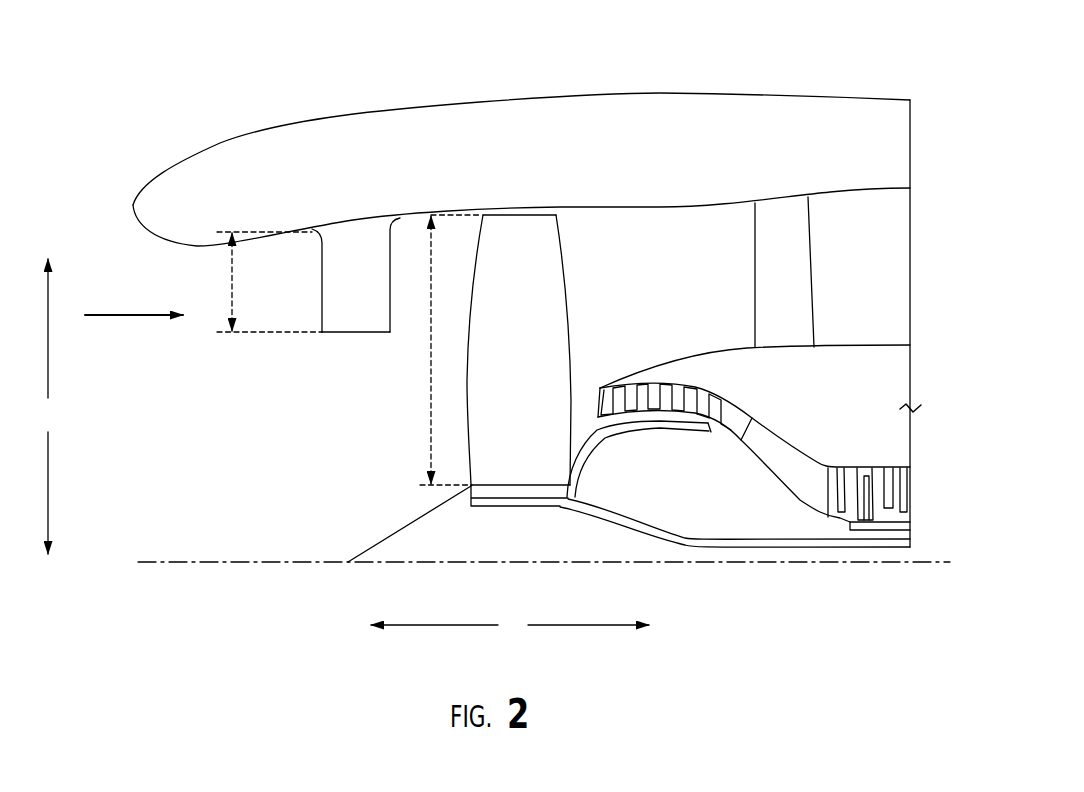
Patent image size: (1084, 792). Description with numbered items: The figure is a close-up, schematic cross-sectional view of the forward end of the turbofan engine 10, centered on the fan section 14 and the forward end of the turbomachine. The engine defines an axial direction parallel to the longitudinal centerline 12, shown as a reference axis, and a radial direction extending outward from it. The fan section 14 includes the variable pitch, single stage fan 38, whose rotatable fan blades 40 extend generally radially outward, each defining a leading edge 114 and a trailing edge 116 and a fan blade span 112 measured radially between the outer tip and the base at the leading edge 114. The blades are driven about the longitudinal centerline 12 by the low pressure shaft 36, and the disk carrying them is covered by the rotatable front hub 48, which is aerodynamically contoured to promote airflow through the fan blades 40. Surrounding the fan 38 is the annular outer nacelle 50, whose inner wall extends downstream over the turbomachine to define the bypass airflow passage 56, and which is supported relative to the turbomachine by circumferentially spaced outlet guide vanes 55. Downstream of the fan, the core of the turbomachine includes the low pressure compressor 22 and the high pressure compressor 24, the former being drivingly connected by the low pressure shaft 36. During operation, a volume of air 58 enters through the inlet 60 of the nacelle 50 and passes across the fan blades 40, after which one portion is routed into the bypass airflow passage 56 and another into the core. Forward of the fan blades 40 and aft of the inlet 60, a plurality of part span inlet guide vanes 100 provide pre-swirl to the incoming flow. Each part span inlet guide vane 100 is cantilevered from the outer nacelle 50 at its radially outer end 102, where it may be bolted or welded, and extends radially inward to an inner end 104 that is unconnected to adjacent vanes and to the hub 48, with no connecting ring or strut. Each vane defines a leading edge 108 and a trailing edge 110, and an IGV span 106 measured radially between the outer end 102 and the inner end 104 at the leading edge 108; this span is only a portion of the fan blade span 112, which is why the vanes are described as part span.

The turbofan engine 10 is at (713, 62).
The longitudinal centerline 12 is at (218, 562).
The fan section 14 is at (386, 132).
The low pressure compressor 22 is at (735, 392).
The high pressure compressor 24 is at (862, 455).
The low pressure shaft 36 is at (750, 548).
The fan 38 is at (533, 192).
The fan blade 40 is at (555, 345).
The hub 48 is at (370, 548).
The outer nacelle 50 is at (507, 100).
The outlet guide vane 55 is at (805, 283).
The bypass airflow passage 56 is at (755, 327).
The volume of air 58 is at (145, 315).
The inlet 60 is at (132, 276).
The part span inlet guide vane 100 is at (343, 225).
The outer end 102 is at (372, 215).
The inner end 104 is at (361, 337).
The IGV span 106 is at (230, 287).
The leading edge 108 is at (298, 308).
The trailing edge 110 is at (393, 308).
The fan blade span 112 is at (428, 418).
The leading edge 114 is at (472, 333).
The trailing edge 116 is at (572, 312).